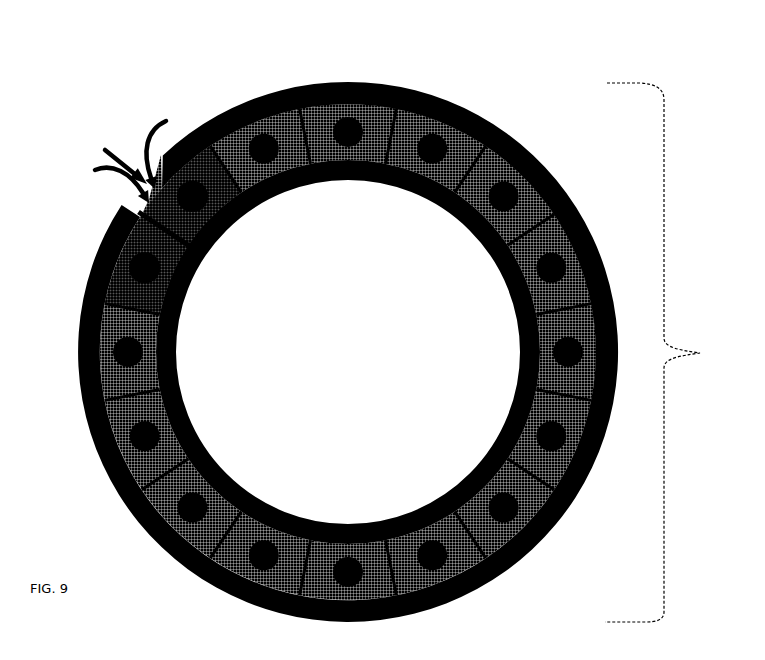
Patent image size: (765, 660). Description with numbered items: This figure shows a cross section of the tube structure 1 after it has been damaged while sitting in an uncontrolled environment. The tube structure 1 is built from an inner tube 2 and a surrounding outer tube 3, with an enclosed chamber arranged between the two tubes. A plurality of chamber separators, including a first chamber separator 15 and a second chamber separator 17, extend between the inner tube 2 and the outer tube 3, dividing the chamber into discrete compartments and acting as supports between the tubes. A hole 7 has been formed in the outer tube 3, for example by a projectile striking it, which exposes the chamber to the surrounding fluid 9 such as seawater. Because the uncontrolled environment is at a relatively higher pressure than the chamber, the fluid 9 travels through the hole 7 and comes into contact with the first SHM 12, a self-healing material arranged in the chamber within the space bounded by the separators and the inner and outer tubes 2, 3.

The tube structure 1 is at (700, 353).
The inner tube 2 is at (214, 244).
The outer tube 3 is at (77, 353).
The hole 7 is at (134, 190).
The fluid 9 is at (113, 146).
The first self-healing material (SHM) 12 is at (201, 206).
The first chamber separator 15 is at (217, 175).
The second chamber separator 17 is at (158, 243).